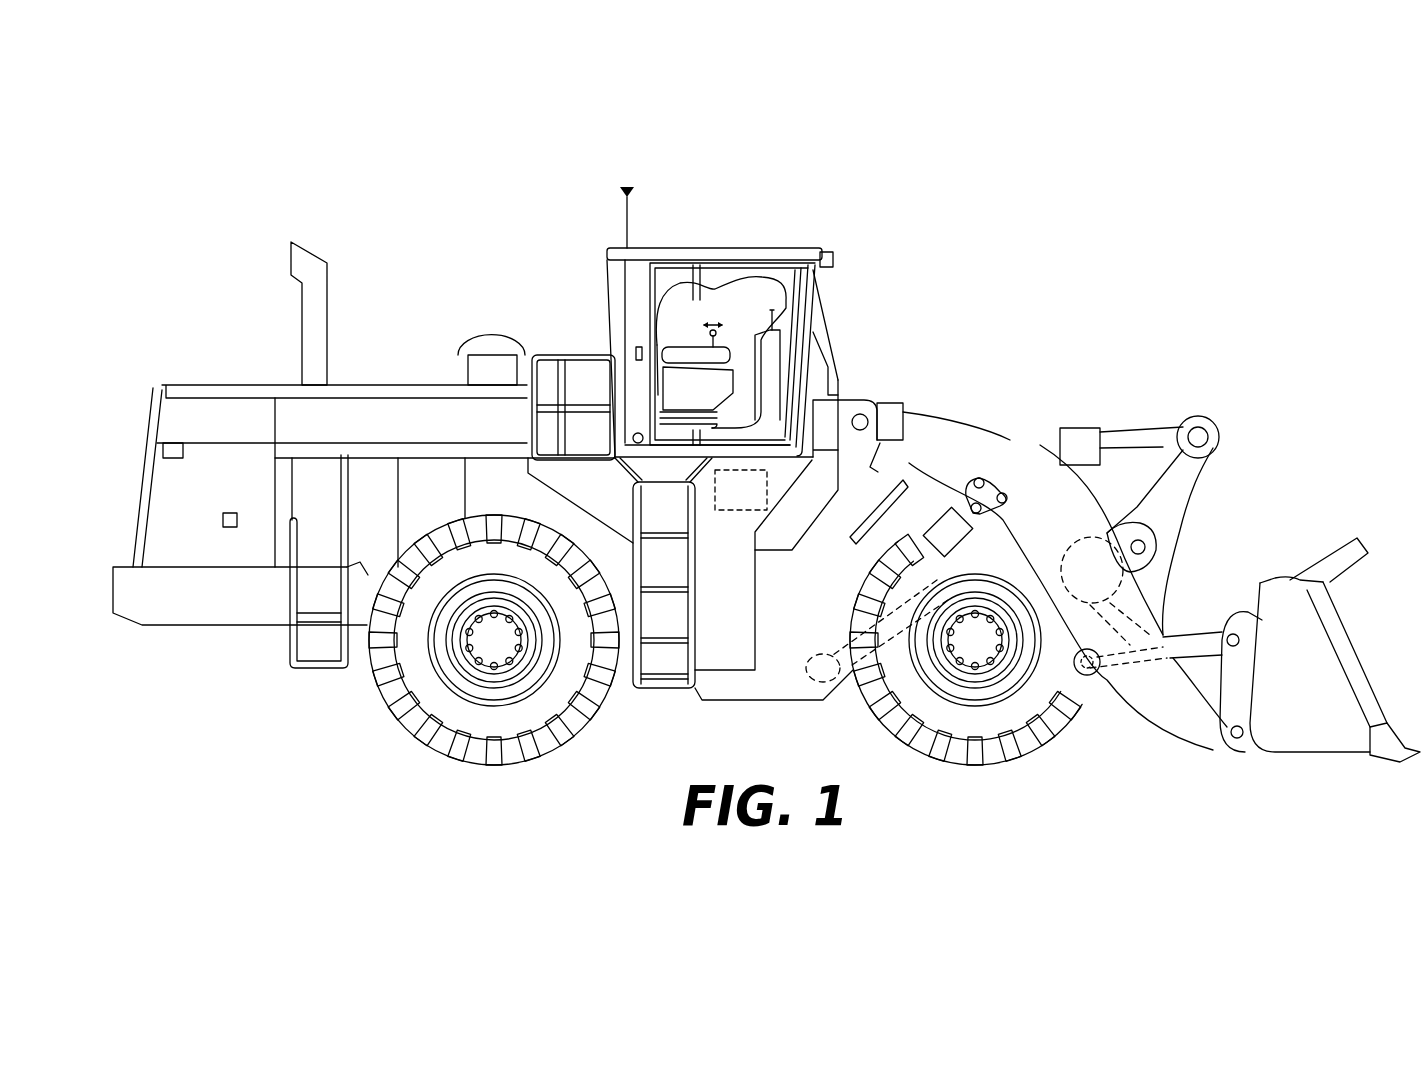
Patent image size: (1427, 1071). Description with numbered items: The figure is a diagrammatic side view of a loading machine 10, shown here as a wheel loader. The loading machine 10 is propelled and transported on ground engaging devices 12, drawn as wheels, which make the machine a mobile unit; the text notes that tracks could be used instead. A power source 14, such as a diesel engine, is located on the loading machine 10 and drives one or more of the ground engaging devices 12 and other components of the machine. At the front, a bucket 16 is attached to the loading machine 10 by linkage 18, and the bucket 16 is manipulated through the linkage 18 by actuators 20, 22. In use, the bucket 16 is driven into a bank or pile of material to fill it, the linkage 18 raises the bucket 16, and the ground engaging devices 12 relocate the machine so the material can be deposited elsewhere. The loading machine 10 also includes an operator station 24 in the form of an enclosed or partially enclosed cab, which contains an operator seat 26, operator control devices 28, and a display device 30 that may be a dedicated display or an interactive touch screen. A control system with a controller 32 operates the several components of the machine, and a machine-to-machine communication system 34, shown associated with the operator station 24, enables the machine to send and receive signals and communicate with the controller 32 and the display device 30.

The loading machine 10 is at (360, 170).
The ground engaging devices 12 is at (445, 707).
The power source 14 is at (377, 420).
The bucket 16 is at (1328, 667).
The linkage 18 is at (1206, 354).
The actuator 20 is at (1047, 430).
The actuator 22 is at (960, 540).
The operator station 24 is at (686, 165).
The operator seat 26 is at (675, 343).
The operator control devices 28 is at (729, 333).
The display device 30 is at (766, 322).
The controller 32 is at (753, 503).
The machine-to-machine communication system 34 is at (627, 207).